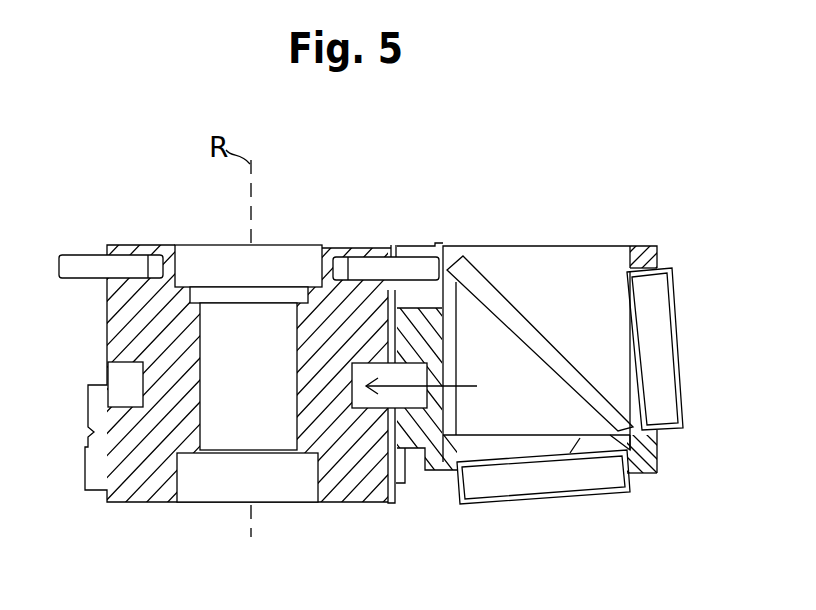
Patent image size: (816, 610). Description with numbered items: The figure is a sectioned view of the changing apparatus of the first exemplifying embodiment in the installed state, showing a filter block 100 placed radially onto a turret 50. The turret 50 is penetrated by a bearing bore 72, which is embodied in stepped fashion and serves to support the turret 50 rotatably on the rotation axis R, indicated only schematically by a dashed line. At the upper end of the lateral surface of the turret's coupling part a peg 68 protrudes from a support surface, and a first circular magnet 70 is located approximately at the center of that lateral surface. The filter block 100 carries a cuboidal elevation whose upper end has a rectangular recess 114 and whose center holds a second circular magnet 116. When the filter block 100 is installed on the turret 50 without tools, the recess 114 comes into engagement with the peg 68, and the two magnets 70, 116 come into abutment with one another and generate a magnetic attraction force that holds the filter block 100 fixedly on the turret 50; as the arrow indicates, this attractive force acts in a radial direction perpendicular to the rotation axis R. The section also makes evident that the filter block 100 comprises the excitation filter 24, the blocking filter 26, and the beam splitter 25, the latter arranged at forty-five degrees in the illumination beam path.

The turret 50 is at (130, 242).
The bearing bore 72 is at (195, 487).
The first circular magnet 70 is at (360, 398).
The peg 68 is at (388, 273).
The rectangular recess 114 is at (398, 256).
The second circular magnet 116 is at (411, 389).
The filter block 100 is at (583, 242).
The beam splitter 25 is at (578, 376).
The excitation filter 24 is at (685, 410).
The blocking filter 26 is at (626, 490).